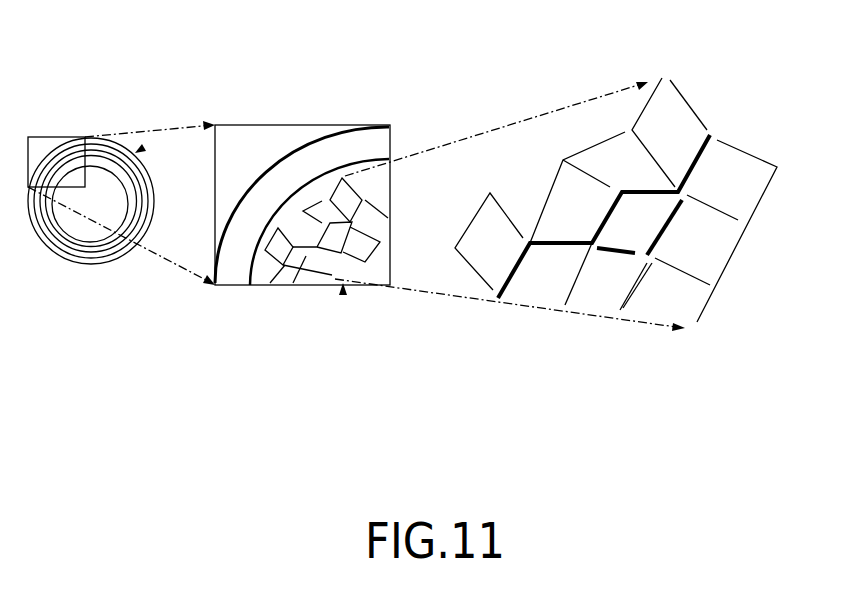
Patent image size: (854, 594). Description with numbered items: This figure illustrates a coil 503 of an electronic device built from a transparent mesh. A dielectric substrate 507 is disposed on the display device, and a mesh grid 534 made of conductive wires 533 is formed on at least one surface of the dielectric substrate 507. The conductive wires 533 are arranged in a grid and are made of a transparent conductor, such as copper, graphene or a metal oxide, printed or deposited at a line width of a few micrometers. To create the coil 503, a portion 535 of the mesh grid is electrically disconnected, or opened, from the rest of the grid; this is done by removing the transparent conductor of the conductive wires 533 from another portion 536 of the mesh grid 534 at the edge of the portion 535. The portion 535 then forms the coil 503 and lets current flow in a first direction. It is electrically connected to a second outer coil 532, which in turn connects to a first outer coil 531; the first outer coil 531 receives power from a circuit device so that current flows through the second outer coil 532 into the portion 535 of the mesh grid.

The coil 503 is at (137, 151).
The dielectric substrate 507 is at (97, 183).
The first outer coil 531 is at (278, 160).
The second outer coil 532 is at (365, 162).
The conductive wires 533 is at (287, 283).
The mesh grid 534 is at (343, 290).
The portion of the mesh grid 535 is at (700, 163).
The another portion of the mesh grid 536 is at (658, 187).